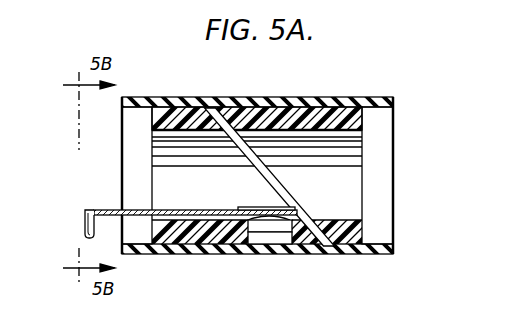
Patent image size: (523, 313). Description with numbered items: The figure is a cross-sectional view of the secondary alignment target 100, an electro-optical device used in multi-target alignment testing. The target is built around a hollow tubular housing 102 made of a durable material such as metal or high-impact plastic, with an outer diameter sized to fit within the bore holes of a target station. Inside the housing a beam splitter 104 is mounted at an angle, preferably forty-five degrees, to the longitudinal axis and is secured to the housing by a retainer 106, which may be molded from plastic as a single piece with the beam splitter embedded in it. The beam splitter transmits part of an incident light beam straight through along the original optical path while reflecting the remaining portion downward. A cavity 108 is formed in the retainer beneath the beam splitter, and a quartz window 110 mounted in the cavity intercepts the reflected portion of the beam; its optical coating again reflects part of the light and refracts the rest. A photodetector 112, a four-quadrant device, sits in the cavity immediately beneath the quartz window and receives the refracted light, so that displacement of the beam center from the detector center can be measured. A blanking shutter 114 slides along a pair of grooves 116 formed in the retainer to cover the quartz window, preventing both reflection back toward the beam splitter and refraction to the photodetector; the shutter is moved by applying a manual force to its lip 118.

The secondary alignment target 100 is at (246, 182).
The hollow tubular housing 102 is at (355, 98).
The beam splitter 104 is at (273, 168).
The retainer 106 is at (292, 110).
The cavity 108 is at (286, 203).
The quartz window 110 is at (260, 226).
The photodetector 112 is at (283, 236).
The blanking shutter 114 is at (167, 211).
The grooves 116 is at (272, 210).
The lip 118 is at (87, 228).